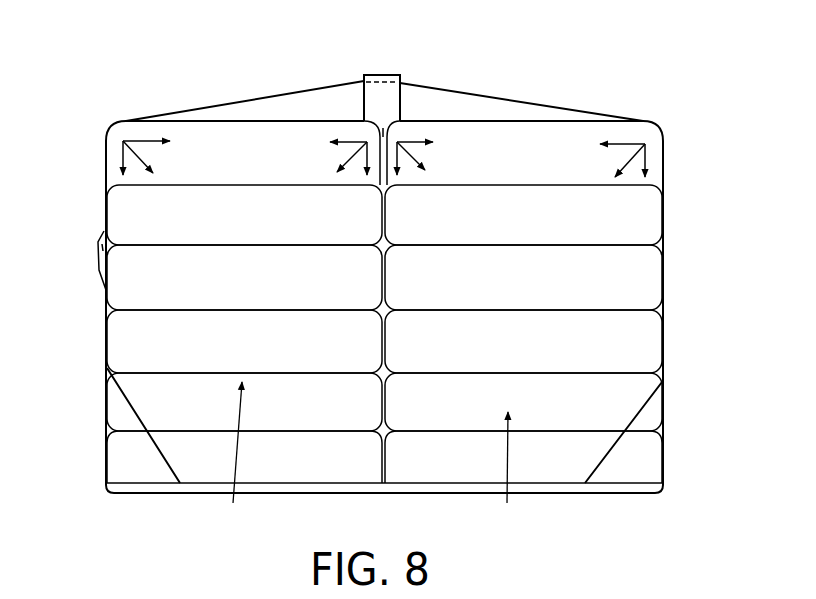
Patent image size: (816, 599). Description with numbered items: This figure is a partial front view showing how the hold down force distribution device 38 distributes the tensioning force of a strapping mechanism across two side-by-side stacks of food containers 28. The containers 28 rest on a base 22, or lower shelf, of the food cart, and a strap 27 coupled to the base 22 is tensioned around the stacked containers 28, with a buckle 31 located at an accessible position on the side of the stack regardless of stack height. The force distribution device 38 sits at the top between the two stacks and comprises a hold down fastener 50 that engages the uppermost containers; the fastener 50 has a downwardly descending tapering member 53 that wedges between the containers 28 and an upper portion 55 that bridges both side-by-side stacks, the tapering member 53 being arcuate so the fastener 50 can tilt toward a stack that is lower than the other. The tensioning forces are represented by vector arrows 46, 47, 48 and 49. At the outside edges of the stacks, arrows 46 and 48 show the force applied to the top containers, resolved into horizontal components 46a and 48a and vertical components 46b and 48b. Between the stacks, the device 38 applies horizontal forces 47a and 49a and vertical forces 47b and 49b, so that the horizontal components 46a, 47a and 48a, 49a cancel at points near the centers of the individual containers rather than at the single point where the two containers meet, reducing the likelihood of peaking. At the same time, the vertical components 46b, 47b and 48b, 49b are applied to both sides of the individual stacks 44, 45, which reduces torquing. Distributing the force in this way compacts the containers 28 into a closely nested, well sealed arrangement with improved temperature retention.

The base 22 is at (425, 487).
The strap 27 is at (107, 368).
The food containers 28 is at (570, 133).
The buckle 31 is at (96, 248).
The force distribution device 38 is at (383, 68).
The individual stack 44 is at (227, 457).
The individual stack 45 is at (506, 472).
The vector arrow 46 is at (104, 137).
The horizontal force component 46a is at (148, 140).
The vertical force component 46b is at (79, 157).
The vector arrow 47 is at (291, 127).
The horizontal force component 47a is at (340, 142).
The vertical force component 47b is at (363, 160).
The vector arrow 48 is at (673, 144).
The horizontal force component 48a is at (625, 144).
The vertical force component 48b is at (646, 160).
The vector arrow 49 is at (478, 137).
The horizontal force component 49a is at (413, 142).
The vertical force component 49b is at (403, 162).
The hold down fastener 50 is at (378, 92).
The tapering member 53 is at (362, 126).
The upper portion 55 is at (386, 130).